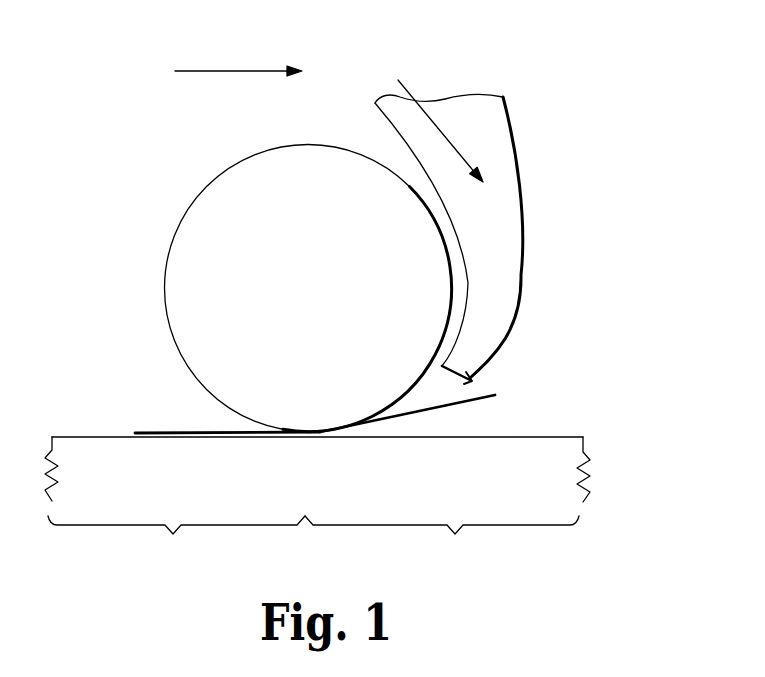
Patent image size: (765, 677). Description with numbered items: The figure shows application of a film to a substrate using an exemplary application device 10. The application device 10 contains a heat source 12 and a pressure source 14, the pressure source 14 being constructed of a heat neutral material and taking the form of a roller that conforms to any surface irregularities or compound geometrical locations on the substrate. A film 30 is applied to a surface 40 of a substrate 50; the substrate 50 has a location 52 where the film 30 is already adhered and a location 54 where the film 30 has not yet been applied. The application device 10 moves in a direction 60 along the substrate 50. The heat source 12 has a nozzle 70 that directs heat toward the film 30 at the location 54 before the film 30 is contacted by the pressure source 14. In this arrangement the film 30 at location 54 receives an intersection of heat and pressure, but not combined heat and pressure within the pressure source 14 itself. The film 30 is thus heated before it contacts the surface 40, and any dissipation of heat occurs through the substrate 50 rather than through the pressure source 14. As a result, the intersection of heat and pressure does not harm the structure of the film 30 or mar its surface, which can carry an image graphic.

The application device 10 is at (135, 221).
The heat source 12 is at (483, 145).
The pressure source 14 is at (232, 207).
The film 30 is at (478, 402).
The surface 40 is at (565, 437).
The substrate 50 is at (345, 438).
The location 52 is at (176, 544).
The location 54 is at (442, 544).
The direction 60 is at (228, 71).
The nozzle 70 is at (448, 368).